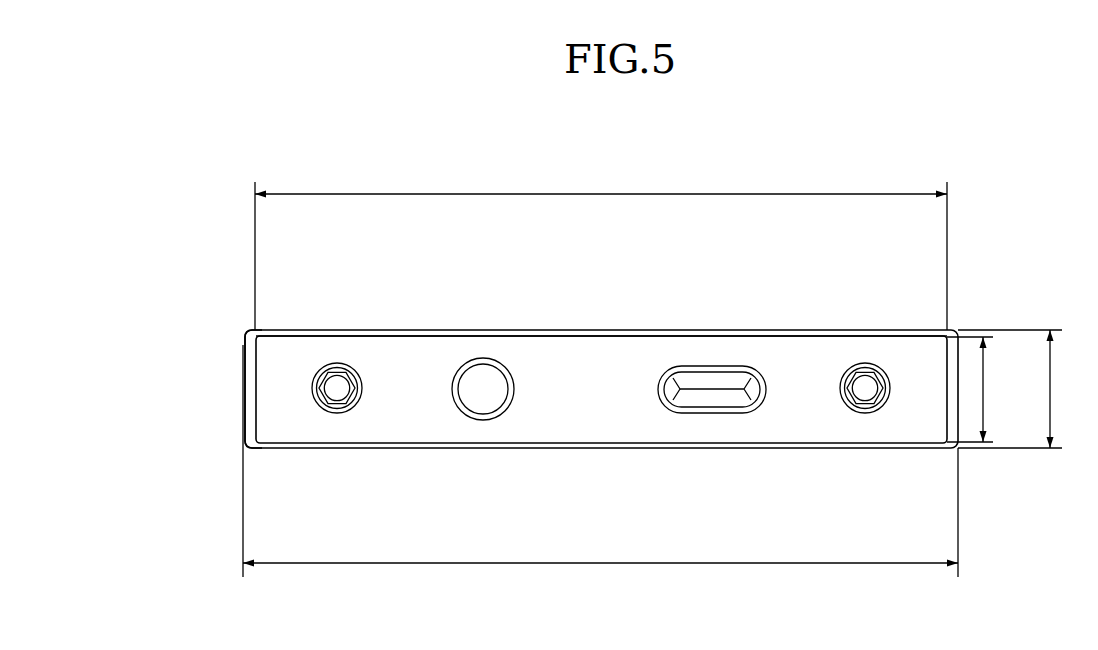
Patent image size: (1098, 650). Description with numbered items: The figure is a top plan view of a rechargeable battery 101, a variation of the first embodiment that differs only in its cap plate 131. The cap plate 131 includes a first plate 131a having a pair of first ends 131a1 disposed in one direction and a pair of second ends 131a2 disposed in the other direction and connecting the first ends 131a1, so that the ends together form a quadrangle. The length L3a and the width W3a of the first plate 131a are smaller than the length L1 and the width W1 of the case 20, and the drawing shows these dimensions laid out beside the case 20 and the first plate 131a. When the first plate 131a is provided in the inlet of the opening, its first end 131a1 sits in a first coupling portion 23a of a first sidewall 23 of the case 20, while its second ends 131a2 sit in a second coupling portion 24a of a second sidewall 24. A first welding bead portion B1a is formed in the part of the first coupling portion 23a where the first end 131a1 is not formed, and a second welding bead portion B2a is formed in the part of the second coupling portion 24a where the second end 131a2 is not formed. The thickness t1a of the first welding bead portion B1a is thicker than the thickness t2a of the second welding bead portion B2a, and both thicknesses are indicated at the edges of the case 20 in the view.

The rechargeable battery 101 is at (611, 246).
The case 20 is at (561, 449).
The first sidewall 23 is at (241, 428).
The first coupling portion 23a is at (243, 400).
The second sidewall 24 is at (837, 330).
The second coupling portion 24a is at (896, 330).
The cap plate 131 is at (704, 362).
The first plate 131a is at (415, 357).
The first end 131a1 is at (248, 339).
The second end 131a2 is at (575, 335).
The first welding bead portion B1a is at (245, 356).
The second welding bead portion B2a is at (340, 330).
The thickness of the first welding bead portion t1a is at (278, 385).
The thickness of the second welding bead portion t2a is at (287, 358).
The length of the case L1 is at (600, 461).
The length of the first plate L3a is at (601, 248).
The width of the case W1 is at (1022, 389).
The width of the first plate W3a is at (988, 389).